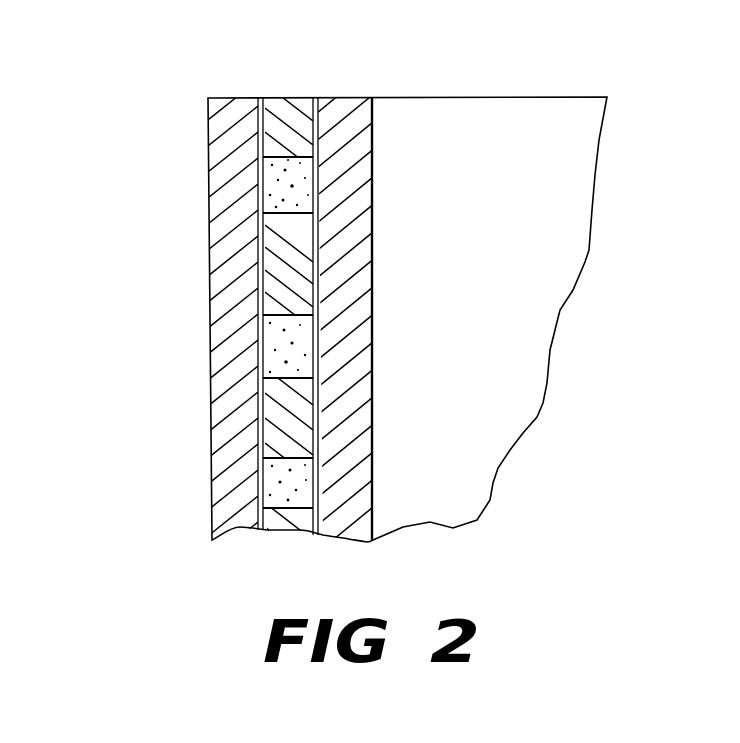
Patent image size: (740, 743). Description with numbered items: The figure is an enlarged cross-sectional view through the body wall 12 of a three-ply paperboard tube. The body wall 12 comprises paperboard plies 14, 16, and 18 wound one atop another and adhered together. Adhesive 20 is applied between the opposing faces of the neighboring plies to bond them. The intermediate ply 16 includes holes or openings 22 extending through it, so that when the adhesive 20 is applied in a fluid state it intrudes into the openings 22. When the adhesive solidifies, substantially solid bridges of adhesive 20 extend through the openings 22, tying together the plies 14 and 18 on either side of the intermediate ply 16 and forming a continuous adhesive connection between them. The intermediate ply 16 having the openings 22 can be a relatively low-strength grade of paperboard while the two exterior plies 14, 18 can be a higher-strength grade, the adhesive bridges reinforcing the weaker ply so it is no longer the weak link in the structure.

The body wall 12 is at (124, 442).
The paperboard ply 14 is at (220, 128).
The intermediate ply 16 is at (285, 110).
The paperboard ply 18 is at (333, 117).
The adhesive 20 is at (277, 357).
The openings 22 is at (278, 192).